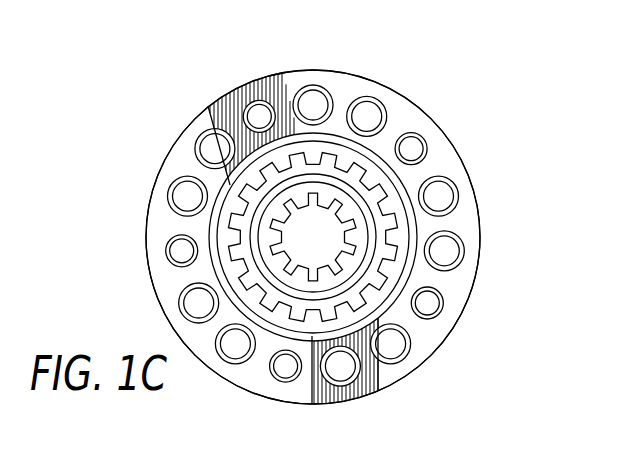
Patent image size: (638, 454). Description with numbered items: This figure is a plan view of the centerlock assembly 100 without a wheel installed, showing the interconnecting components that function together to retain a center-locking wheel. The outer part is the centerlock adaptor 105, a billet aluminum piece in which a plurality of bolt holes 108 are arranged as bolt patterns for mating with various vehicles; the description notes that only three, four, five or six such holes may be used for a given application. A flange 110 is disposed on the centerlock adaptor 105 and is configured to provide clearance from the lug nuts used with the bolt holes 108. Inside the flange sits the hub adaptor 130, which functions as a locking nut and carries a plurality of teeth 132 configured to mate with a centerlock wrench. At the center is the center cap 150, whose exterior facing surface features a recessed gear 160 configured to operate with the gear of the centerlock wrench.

The centerlock assembly 100 is at (383, 60).
The centerlock adaptor 105 is at (465, 151).
The bolt holes 108 is at (368, 116).
The flange 110 is at (396, 277).
The hub adaptor 130 is at (238, 208).
The teeth 132 is at (390, 222).
The center cap 150 is at (330, 283).
The recessed gear 160 is at (313, 195).